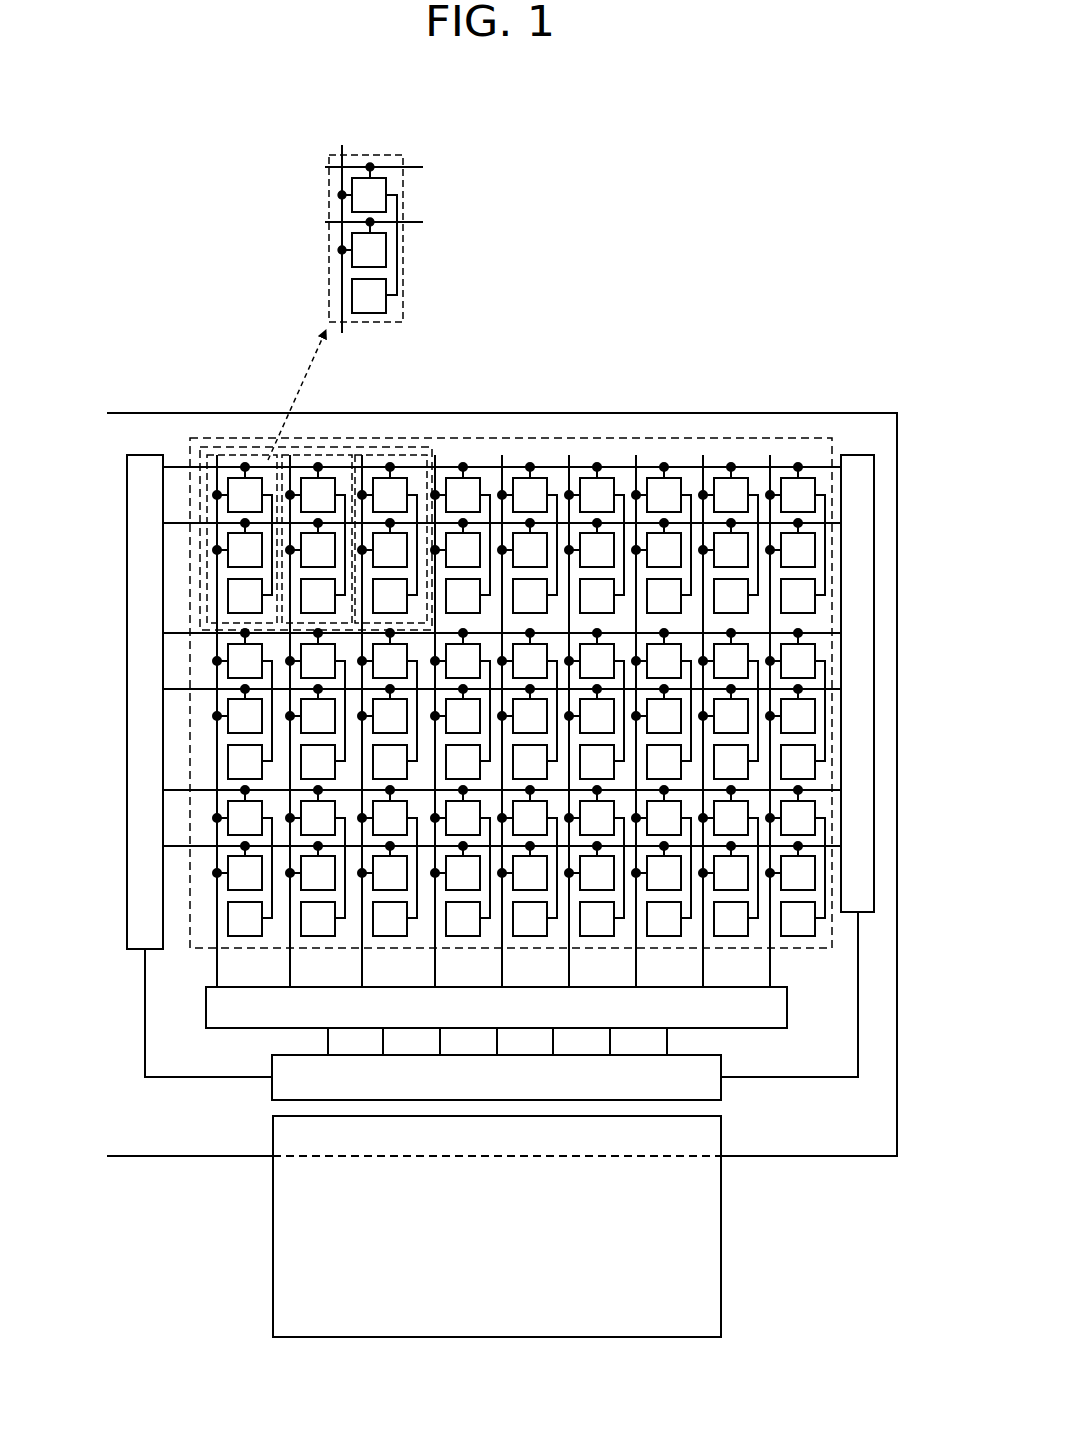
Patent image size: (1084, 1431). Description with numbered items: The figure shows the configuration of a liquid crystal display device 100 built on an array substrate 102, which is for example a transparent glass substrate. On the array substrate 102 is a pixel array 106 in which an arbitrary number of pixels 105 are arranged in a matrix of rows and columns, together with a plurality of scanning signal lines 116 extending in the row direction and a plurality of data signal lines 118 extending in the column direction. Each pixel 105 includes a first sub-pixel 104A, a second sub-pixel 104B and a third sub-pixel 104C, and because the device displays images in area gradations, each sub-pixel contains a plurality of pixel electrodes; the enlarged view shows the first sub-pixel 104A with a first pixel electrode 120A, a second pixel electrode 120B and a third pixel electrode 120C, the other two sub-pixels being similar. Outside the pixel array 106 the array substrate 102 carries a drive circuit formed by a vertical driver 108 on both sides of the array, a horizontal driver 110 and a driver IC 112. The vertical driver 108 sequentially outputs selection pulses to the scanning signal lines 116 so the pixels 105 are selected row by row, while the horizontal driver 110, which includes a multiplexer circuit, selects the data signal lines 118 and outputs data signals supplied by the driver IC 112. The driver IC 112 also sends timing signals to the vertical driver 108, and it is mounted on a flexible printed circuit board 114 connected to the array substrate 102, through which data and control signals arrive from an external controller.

The liquid crystal display device 100 is at (195, 358).
The array substrate 102 is at (720, 412).
The first sub-pixel 104A is at (272, 455).
The second sub-pixel 104B is at (343, 455).
The third sub-pixel 104C is at (392, 455).
The pixel 105 is at (427, 450).
The pixel array 106 is at (520, 438).
The vertical driver 108 is at (127, 582).
The horizontal driver 110 is at (788, 1006).
The driver IC 112 is at (272, 1090).
The flexible printed circuit board 114 is at (713, 1250).
The scanning signal line 116 is at (582, 465).
The data signal line 118 is at (212, 460).
The first pixel electrode 120A is at (388, 252).
The second pixel electrode 120B is at (388, 190).
The third pixel electrode 120C is at (388, 302).